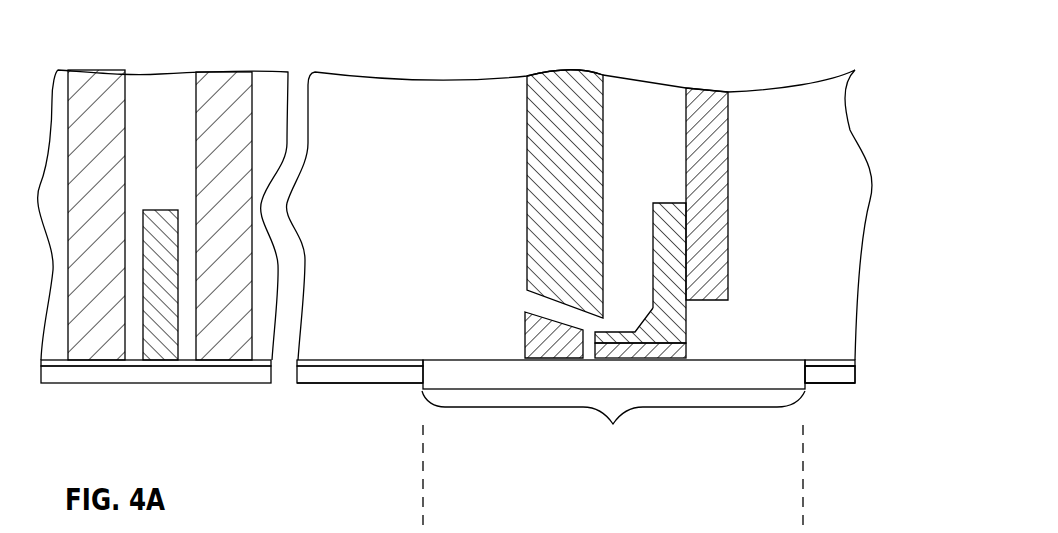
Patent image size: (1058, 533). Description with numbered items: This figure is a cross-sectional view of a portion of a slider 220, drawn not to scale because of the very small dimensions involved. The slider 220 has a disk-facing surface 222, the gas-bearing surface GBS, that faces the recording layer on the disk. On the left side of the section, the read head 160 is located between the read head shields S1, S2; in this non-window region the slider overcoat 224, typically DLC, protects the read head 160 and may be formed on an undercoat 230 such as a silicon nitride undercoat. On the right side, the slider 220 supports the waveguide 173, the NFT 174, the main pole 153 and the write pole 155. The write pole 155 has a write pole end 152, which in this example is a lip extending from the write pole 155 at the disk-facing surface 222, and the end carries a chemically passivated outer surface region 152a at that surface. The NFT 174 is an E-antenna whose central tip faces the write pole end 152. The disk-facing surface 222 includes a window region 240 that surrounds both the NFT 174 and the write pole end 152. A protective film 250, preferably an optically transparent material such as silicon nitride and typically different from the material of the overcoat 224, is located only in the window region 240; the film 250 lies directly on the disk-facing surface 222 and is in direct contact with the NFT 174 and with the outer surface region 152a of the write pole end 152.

The read head shield S1 is at (97, 75).
The read head shield S2 is at (222, 83).
The read head 160 is at (153, 217).
The slider overcoat 224 is at (140, 382).
The undercoat 230 is at (200, 364).
The slider 220 is at (347, 86).
The disk-facing surface 222 is at (323, 358).
The gas-bearing surface GBS is at (307, 383).
The protective film 250 is at (427, 377).
The window region 240 is at (613, 462).
The waveguide 173 is at (530, 128).
The main pole 153 is at (690, 123).
The write pole 155 is at (670, 207).
The write pole end 152 is at (610, 330).
The outer surface region 152a is at (687, 353).
The NFT 174 is at (528, 343).